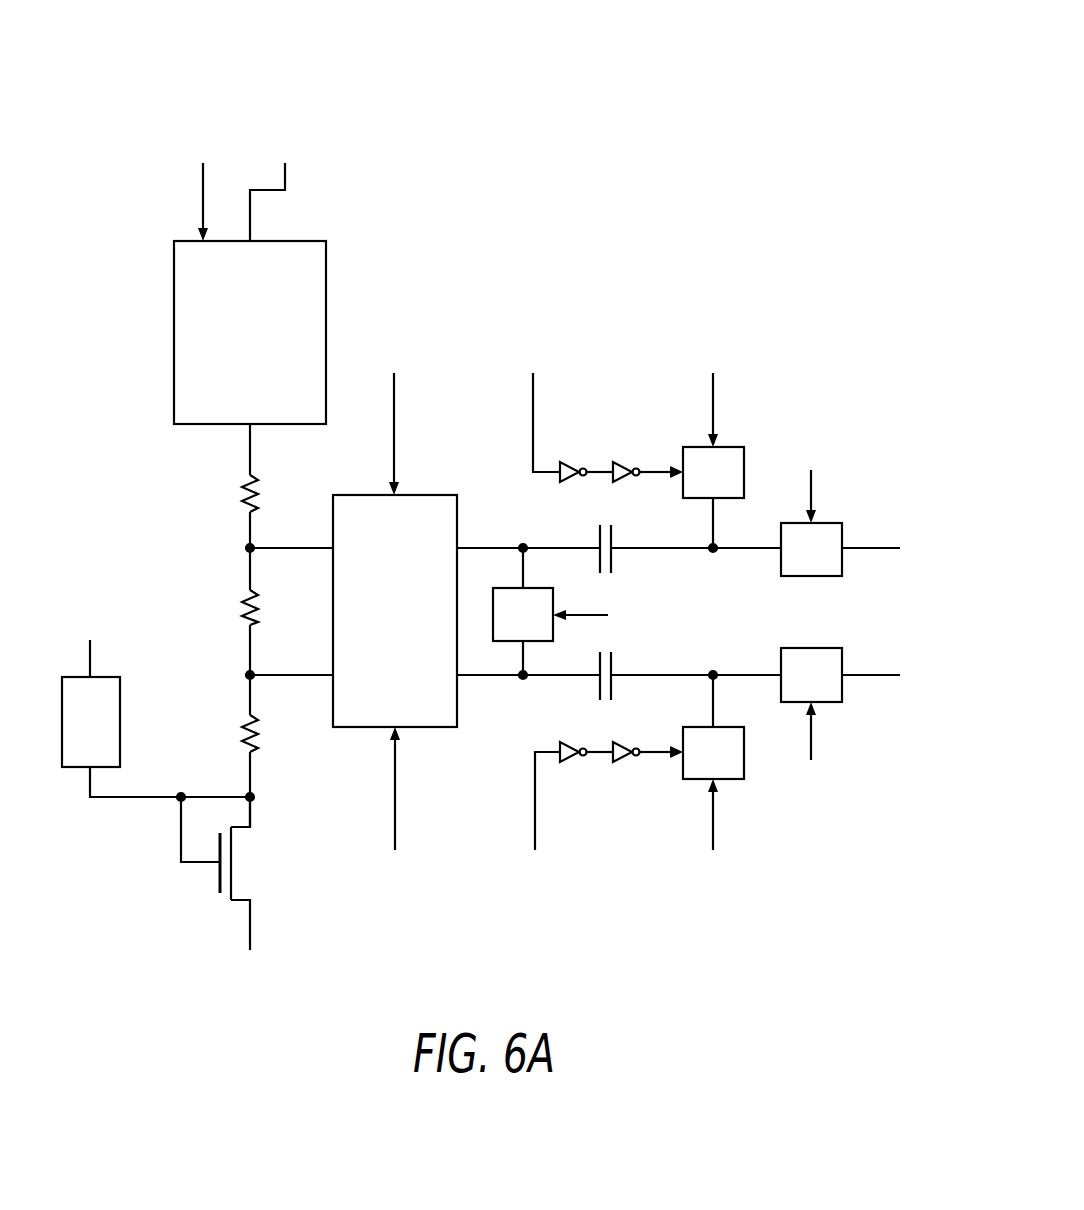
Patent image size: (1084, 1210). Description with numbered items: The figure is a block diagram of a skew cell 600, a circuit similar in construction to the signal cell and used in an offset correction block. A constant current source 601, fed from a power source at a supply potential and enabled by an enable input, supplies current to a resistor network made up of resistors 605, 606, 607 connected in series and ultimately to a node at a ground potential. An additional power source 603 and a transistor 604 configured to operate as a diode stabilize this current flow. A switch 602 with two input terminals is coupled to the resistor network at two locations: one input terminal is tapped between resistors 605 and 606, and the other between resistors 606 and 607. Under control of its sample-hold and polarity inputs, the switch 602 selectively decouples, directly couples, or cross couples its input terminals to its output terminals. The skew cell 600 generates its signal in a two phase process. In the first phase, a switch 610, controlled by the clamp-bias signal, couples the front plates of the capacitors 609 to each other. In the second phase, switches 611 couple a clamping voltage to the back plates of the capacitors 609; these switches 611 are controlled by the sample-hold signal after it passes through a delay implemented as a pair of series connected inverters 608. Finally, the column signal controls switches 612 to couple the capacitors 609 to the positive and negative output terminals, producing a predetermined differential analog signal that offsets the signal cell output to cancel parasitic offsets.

The skew cell 600 is at (308, 88).
The constant current source 601 is at (274, 373).
The switch 602 is at (419, 625).
The additional power source 603 is at (115, 735).
The transistor 604 is at (239, 862).
The resistor 605 is at (245, 488).
The resistor 606 is at (245, 600).
The resistor 607 is at (245, 725).
The inverters 608 is at (571, 464).
The capacitors 609 is at (612, 536).
The switch 610 is at (547, 632).
The switch 611 is at (737, 490).
The switches 612 is at (835, 567).